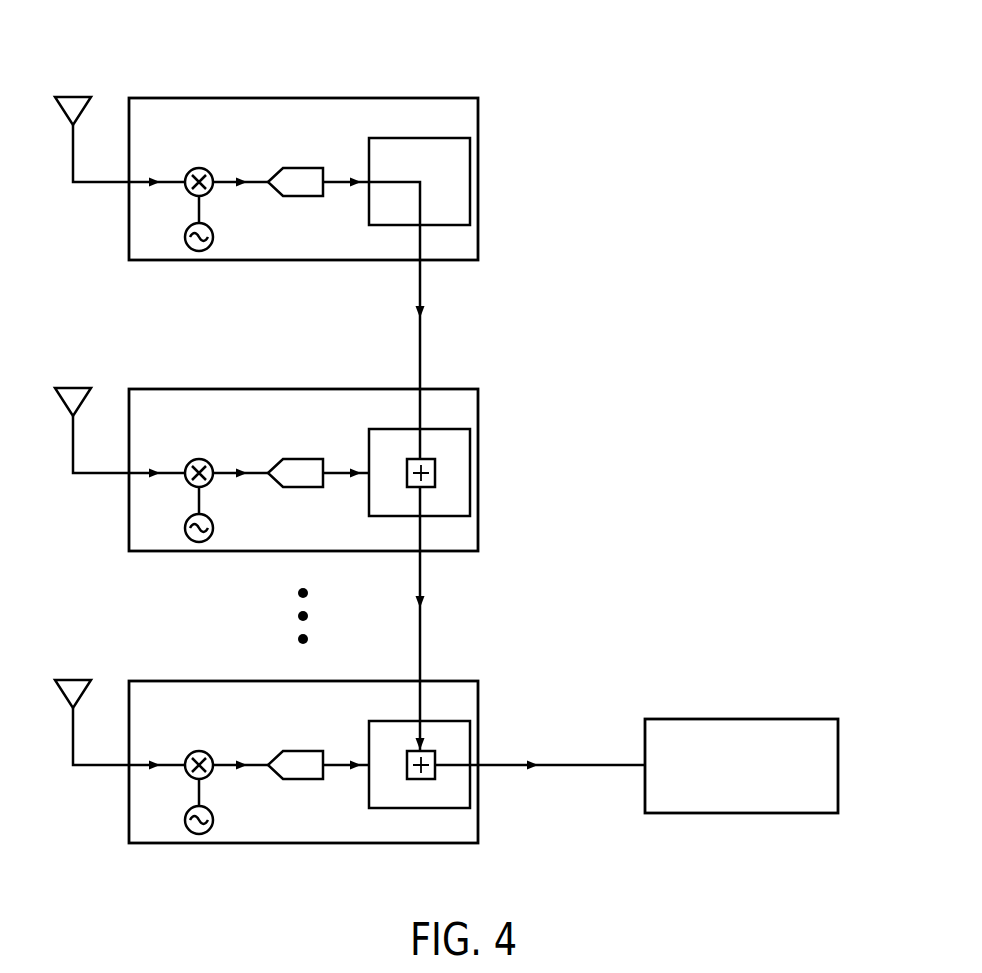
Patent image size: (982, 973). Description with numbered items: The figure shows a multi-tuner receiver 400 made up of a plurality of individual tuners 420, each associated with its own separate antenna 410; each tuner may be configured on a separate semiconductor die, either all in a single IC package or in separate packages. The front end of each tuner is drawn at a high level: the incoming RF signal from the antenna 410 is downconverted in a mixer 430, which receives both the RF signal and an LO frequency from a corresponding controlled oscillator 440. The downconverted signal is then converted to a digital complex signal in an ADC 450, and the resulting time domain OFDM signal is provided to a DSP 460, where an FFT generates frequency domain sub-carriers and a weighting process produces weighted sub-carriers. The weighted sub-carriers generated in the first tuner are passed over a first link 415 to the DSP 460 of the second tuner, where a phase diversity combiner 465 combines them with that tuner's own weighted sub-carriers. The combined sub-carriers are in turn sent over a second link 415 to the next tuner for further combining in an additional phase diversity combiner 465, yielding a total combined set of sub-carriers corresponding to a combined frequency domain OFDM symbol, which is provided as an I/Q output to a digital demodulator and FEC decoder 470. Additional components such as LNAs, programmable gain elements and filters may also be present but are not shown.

The multi-tuner receiver 400 is at (592, 46).
The antenna 410 is at (79, 679).
The link 415 is at (390, 642).
The tuner 420 is at (457, 98).
The mixer 430 is at (189, 172).
The controlled oscillator 440 is at (190, 249).
The ADC 450 is at (302, 197).
The DSP 460 is at (445, 225).
The phase diversity combiner 465 is at (435, 466).
The digital demodulator and FEC decoder 470 is at (742, 719).